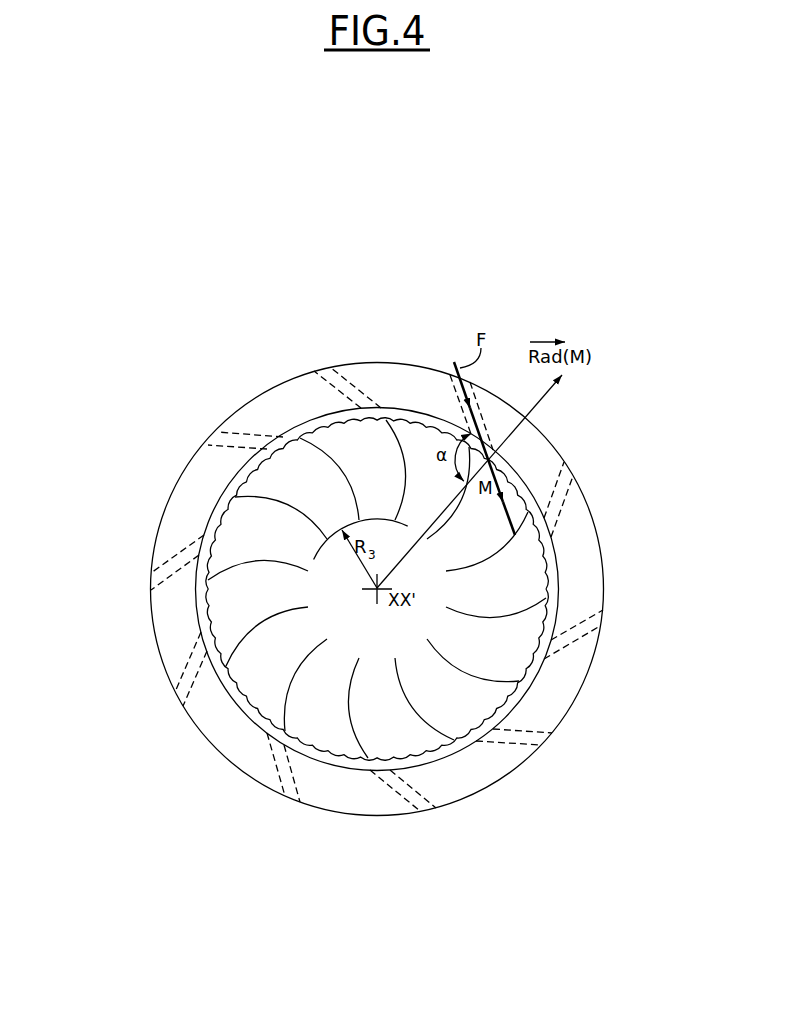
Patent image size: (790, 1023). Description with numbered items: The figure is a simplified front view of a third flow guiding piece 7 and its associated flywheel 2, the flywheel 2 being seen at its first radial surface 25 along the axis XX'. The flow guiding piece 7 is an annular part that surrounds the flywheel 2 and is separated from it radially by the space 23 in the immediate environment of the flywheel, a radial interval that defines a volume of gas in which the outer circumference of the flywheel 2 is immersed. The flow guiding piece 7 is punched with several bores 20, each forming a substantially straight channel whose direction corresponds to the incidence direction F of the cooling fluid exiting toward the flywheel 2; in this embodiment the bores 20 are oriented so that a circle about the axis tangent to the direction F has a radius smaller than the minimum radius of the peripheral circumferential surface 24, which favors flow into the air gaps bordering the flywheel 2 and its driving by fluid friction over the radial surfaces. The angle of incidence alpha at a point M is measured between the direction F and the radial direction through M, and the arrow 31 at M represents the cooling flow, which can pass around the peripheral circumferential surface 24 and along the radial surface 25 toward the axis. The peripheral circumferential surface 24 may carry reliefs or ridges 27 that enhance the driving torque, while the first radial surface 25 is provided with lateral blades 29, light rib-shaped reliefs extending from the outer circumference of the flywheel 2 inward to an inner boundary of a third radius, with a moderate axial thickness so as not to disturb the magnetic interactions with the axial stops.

The flywheel 2 is at (369, 640).
The flow guiding piece 7 is at (360, 817).
The bores 20 is at (570, 470).
The space in the immediate environment of the flywheel 23 is at (560, 643).
The peripheral circumferential surface 24 is at (273, 440).
The first radial surface 25 is at (525, 590).
The reliefs, rough spots or ridges 27 is at (207, 552).
The lateral blades 29 is at (210, 620).
The arrow 31 is at (472, 388).